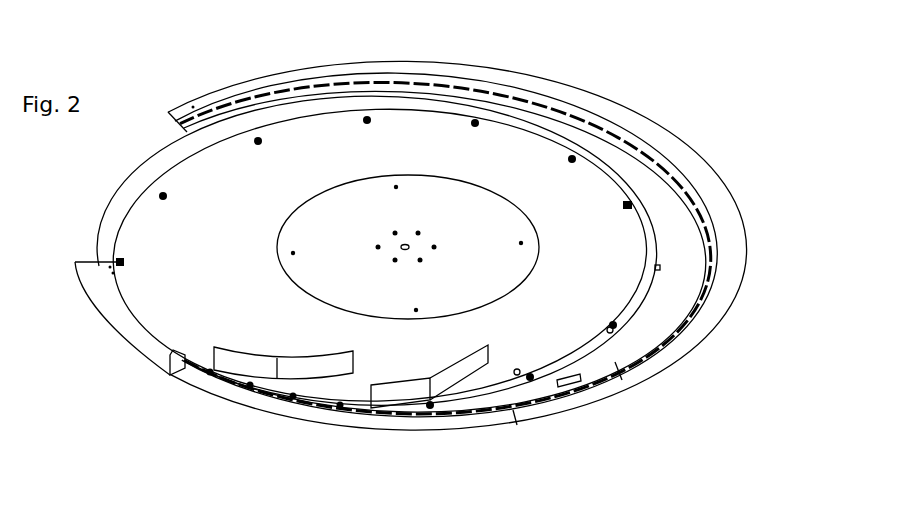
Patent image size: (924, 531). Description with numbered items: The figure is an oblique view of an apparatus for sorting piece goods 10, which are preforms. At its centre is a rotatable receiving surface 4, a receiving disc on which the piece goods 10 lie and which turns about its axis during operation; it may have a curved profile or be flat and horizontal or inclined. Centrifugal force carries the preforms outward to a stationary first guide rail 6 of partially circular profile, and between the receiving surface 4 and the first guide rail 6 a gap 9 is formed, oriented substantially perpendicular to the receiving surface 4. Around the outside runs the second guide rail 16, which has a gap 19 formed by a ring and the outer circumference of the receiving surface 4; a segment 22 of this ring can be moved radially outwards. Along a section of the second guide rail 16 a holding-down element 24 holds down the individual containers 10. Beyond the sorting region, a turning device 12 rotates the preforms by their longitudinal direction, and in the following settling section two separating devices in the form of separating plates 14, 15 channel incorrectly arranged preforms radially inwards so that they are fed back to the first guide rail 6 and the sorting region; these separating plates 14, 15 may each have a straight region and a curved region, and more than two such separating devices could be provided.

The receiving surface 4 is at (548, 193).
The first guide rail 6 is at (620, 167).
The gap 9 is at (533, 133).
The piece goods 10 is at (657, 268).
The turning device 12 is at (105, 282).
The separating plate 14 is at (292, 370).
The separating plate 15 is at (418, 390).
The second guide rail 16 is at (686, 163).
The gap 19 is at (683, 177).
The segment 22 is at (585, 397).
The holding-down element 24 is at (612, 356).